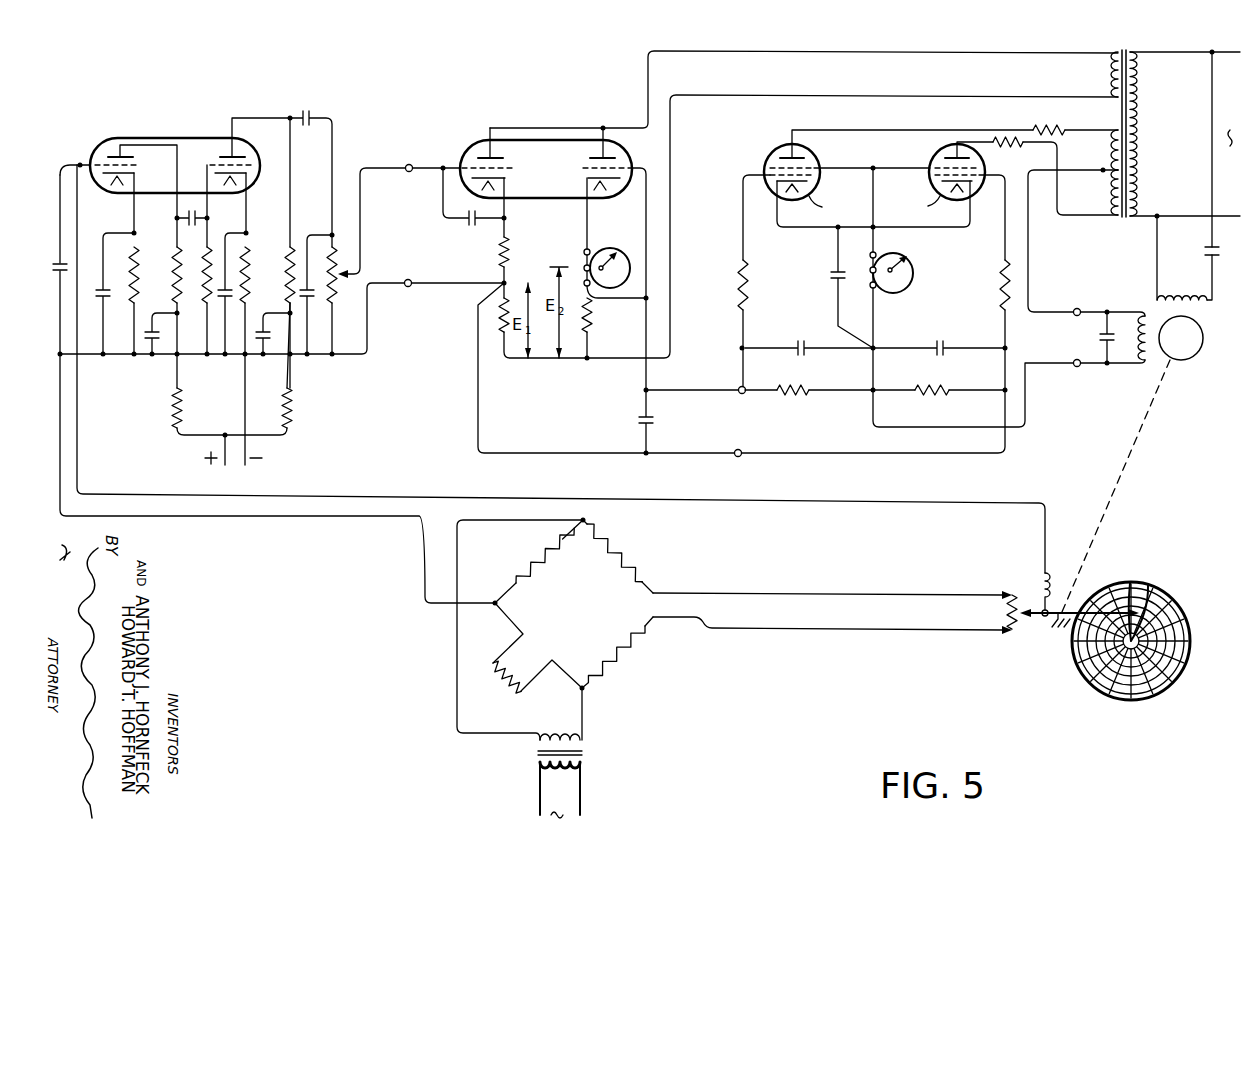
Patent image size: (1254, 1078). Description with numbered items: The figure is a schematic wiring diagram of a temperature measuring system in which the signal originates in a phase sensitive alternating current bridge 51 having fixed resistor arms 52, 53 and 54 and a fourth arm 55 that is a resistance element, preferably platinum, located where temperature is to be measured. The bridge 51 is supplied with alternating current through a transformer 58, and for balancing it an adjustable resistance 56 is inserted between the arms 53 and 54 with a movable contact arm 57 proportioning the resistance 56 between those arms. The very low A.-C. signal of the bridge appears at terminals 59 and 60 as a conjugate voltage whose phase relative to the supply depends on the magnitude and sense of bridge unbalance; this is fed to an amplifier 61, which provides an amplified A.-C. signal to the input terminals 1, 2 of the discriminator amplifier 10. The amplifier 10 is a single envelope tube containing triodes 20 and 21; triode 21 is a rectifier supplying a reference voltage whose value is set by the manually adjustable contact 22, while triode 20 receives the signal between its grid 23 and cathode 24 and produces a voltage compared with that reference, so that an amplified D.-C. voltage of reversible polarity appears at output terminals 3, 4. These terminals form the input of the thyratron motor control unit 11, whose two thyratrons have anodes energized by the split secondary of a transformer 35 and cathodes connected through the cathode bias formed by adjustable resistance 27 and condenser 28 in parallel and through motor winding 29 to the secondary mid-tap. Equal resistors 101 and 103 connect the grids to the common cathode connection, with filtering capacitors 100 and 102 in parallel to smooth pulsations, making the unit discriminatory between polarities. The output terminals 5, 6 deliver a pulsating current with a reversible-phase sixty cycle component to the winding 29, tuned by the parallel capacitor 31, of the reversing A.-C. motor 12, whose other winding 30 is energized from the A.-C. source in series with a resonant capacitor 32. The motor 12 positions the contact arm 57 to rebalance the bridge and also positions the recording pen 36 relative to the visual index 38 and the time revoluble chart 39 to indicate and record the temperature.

The input terminal 1 is at (408, 163).
The input terminal 2 is at (408, 288).
The output terminal 3 is at (741, 386).
The output terminal 4 is at (738, 449).
The output terminal 5 is at (1077, 308).
The output terminal 6 is at (1077, 367).
The amplifier 10 is at (549, 154).
The thyratron motor control unit 11 is at (963, 128).
The reversing A.-C. motor 12 is at (1184, 360).
The triode 20 is at (467, 146).
The triode 21 is at (631, 154).
The manually adjustable contact 22 is at (602, 252).
The grid 23 is at (512, 168).
The cathode 24 is at (504, 178).
The adjustable resistance 27 is at (908, 283).
The condenser 28 is at (830, 278).
The motor winding 29 is at (1136, 350).
The winding 30 is at (1201, 296).
The capacitor 31 is at (1100, 337).
The capacitor 32 is at (1204, 252).
The transformer 35 is at (1178, 149).
The recording pen 36 is at (1071, 611).
The visual index 38 is at (1145, 591).
The time revoluble chart 39 is at (1103, 700).
The phase sensitive alternating current bridge 51 is at (594, 616).
The fixed resistor arm 52 is at (536, 563).
The fixed resistor arm 53 is at (627, 561).
The fixed resistor arm 54 is at (619, 666).
The resistance element 55 is at (506, 681).
The adjustable resistance 56 is at (1005, 601).
The movable contact arm 57 is at (1040, 619).
The transformer 58 is at (617, 763).
The terminal 59 is at (60, 354).
The terminal 60 is at (79, 164).
The amplifier 61 is at (214, 136).
The filtering capacitor 100 is at (809, 342).
The resistor 101 is at (809, 383).
The filtering capacitor 102 is at (939, 342).
The resistor 103 is at (939, 383).